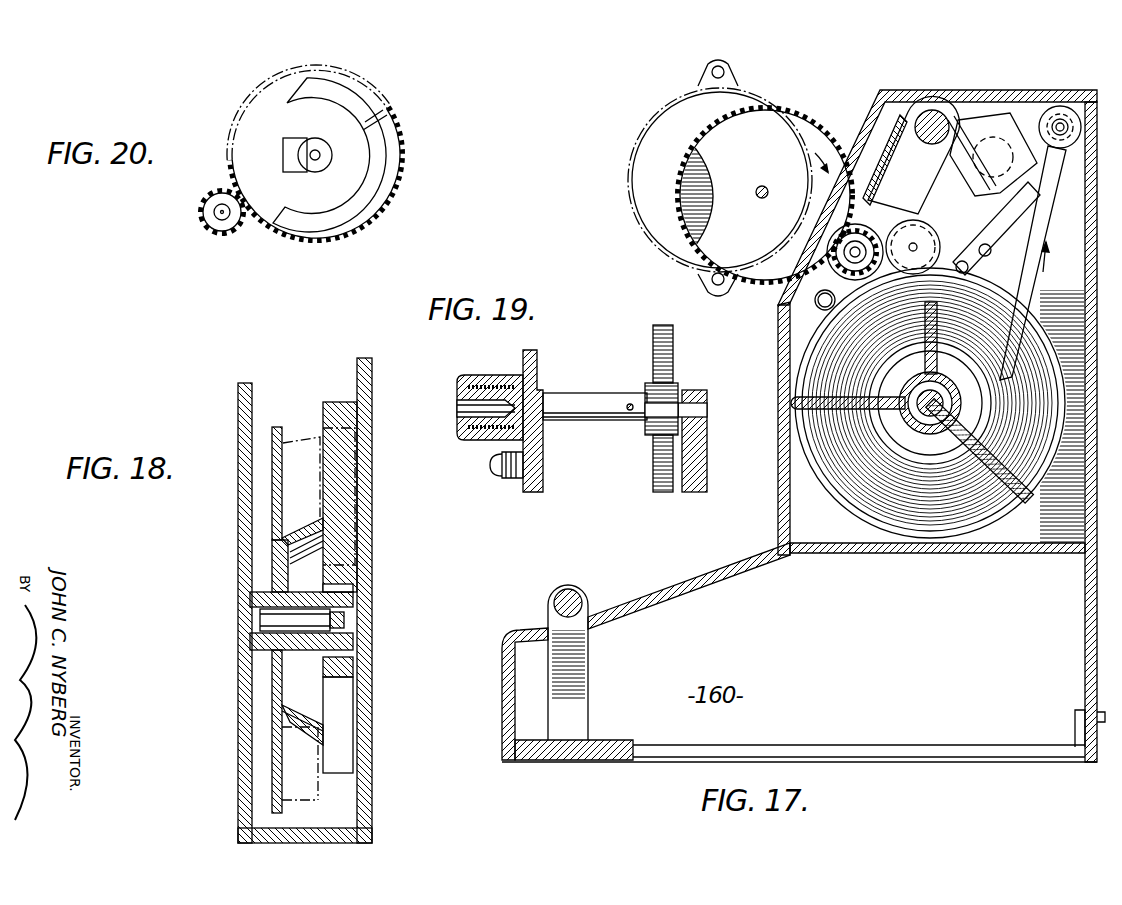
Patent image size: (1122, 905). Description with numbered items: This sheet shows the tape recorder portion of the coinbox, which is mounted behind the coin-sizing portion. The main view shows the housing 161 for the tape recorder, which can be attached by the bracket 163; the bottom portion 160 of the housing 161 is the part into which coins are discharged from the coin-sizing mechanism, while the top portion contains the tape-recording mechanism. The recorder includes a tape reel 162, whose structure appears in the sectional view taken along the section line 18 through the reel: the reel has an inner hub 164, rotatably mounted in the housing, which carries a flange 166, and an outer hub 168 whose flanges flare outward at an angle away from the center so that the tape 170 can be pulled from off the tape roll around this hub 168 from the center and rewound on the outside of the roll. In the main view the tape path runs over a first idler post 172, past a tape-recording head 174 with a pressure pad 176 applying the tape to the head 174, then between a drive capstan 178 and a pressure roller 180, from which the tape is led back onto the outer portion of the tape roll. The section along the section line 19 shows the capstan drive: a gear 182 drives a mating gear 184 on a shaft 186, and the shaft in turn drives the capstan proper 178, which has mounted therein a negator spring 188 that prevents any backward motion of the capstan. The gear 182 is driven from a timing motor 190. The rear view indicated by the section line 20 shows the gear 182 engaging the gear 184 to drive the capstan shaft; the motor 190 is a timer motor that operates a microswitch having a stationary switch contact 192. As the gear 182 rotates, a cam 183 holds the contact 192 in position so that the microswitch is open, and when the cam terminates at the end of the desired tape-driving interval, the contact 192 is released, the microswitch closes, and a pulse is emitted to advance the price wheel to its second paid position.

In FIG. 17, the bottom portion 160 is at (1085, 670).
In FIG. 17, the housing 161 is at (1066, 100).
In FIG. 18, the housing 161 is at (240, 575).
In FIG. 19, the housing 161 is at (533, 492).
In FIG. 17, the tape reel 162 is at (877, 455).
In FIG. 18, the tape reel 162 is at (325, 715).
In FIG. 17, the bracket 163 is at (568, 600).
In FIG. 17, the inner hub 164 is at (918, 410).
In FIG. 18, the inner hub 164 is at (353, 600).
In FIG. 17, the flange 166 is at (1003, 503).
In FIG. 18, the flange 166 is at (278, 427).
In FIG. 17, the outer hub 168 is at (920, 470).
In FIG. 18, the outer hub 168 is at (325, 522).
In FIG. 17, the tape 170 is at (1025, 322).
In FIG. 18, the tape 170 is at (313, 437).
In FIG. 17, the first idler post 172 is at (1070, 148).
In FIG. 17, the tape-recording head 174 is at (995, 120).
In FIG. 17, the pressure pad 176 is at (996, 228).
In FIG. 17, the drive capstan 178 is at (832, 270).
In FIG. 19, the drive capstan 178 is at (462, 440).
In FIG. 17, the pressure roller 180 is at (918, 240).
In FIG. 17, the gear 182 is at (812, 127).
In FIG. 19, the gear 182 is at (654, 353).
In FIG. 20, the gear 182 is at (400, 129).
In FIG. 20, the cam 183 is at (387, 168).
In FIG. 17, the mating gear 184 is at (830, 236).
In FIG. 19, the mating gear 184 is at (652, 426).
In FIG. 20, the mating gear 184 is at (225, 237).
In FIG. 17, the shaft 186 is at (852, 252).
In FIG. 19, the shaft 186 is at (567, 395).
In FIG. 20, the shaft 186 is at (213, 212).
In FIG. 17, the negator spring 188 is at (820, 302).
In FIG. 19, the negator spring 188 is at (482, 378).
In FIG. 17, the timing motor 190 is at (630, 172).
In FIG. 20, the switch contact 192 is at (370, 120).
In FIG. 17, the section line 18— 18 is at (932, 295).
In FIG. 17, the section line 19— 19 is at (858, 214).
In FIG. 17, the section line 20— 20 is at (682, 362).